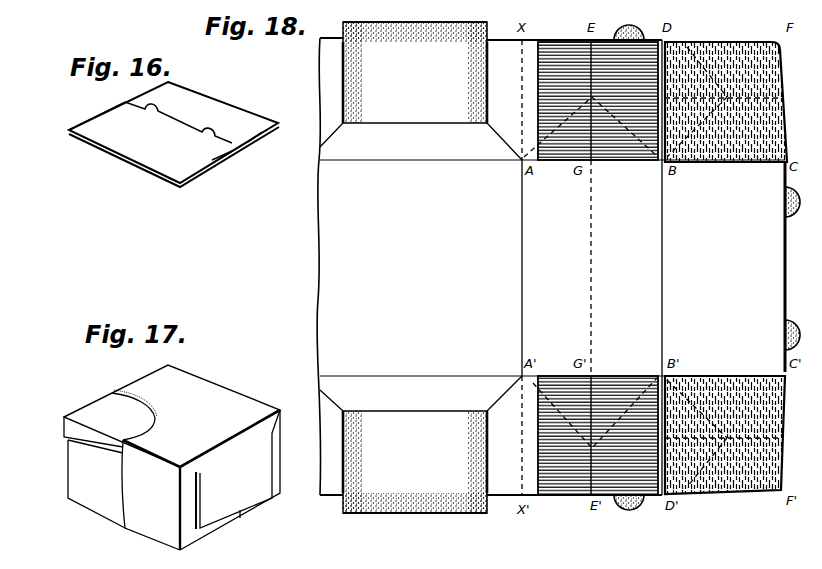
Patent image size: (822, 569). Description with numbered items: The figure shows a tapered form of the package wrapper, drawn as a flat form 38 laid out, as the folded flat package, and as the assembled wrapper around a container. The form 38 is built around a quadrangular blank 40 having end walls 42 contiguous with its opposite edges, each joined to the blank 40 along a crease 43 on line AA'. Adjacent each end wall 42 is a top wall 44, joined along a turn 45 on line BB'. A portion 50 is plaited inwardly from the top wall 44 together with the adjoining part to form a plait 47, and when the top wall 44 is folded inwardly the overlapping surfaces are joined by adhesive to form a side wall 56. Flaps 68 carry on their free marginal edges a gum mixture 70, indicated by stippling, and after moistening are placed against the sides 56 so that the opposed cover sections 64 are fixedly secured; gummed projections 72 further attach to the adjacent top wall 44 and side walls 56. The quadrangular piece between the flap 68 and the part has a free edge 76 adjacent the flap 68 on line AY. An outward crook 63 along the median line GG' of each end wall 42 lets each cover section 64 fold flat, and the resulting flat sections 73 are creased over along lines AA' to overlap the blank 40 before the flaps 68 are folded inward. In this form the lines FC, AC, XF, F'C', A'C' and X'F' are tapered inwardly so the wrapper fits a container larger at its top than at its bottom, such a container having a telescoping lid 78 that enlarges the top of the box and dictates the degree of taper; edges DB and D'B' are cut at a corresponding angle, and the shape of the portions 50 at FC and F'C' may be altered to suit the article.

In FIG. 18, the form 38 is at (516, 540).
In FIG. 17, the quadrangular blank 40 is at (227, 405).
In FIG. 18, the quadrangular blank 40 is at (551, 266).
In FIG. 18, the end wall 42 is at (544, 267).
In FIG. 17, the crease 43 is at (152, 450).
In FIG. 18, the crease 43 is at (524, 232).
In FIG. 18, the top wall 44 is at (744, 267).
In FIG. 18, the turn 45 is at (662, 288).
In FIG. 18, the plait 47 is at (617, 162).
In FIG. 18, the portion 50 is at (770, 127).
In FIG. 17, the side wall 56 is at (273, 452).
In FIG. 18, the outward crook 63 is at (592, 285).
In FIG. 17, the cover section 64 is at (162, 547).
In FIG. 17, the flap 68 is at (248, 487).
In FIG. 18, the flap 68 is at (415, 267).
In FIG. 18, the gum mixture 70 is at (478, 27).
In FIG. 16, the projection 72 is at (150, 107).
In FIG. 18, the projection 72 is at (634, 26).
In FIG. 16, the flat section 73 is at (232, 110).
In FIG. 18, the free edge 76 is at (490, 90).
In FIG. 17, the telescoping lid 78 is at (87, 413).